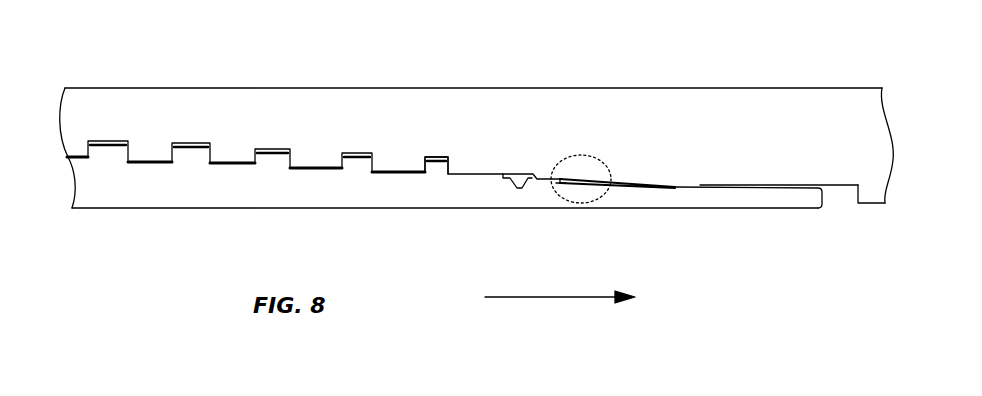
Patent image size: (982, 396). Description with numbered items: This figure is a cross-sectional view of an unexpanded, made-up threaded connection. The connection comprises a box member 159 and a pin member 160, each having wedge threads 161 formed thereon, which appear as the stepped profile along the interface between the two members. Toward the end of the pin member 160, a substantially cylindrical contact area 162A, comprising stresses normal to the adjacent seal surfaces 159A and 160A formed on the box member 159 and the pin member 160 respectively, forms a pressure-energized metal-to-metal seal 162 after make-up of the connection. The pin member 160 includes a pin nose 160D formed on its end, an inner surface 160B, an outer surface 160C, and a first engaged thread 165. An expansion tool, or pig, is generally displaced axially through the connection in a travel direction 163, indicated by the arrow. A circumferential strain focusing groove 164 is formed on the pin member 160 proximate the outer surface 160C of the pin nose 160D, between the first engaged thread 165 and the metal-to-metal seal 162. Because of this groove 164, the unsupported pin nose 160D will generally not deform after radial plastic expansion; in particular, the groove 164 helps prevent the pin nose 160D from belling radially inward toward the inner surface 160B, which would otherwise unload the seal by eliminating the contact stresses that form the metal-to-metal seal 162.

The box member 159 is at (677, 98).
The seal surface 159A is at (560, 185).
The pin member 160 is at (192, 193).
The seal surface 160A is at (568, 178).
The inner surface 160B is at (722, 209).
The outer surface 160C is at (722, 184).
The pin nose 160D is at (822, 206).
The wedge threads 161 is at (272, 155).
The metal-to-metal seal 162 is at (593, 200).
The contact area 162A is at (590, 179).
The travel direction 163 is at (550, 298).
The strain focusing groove 164 is at (519, 188).
The first engaged thread 165 is at (435, 155).